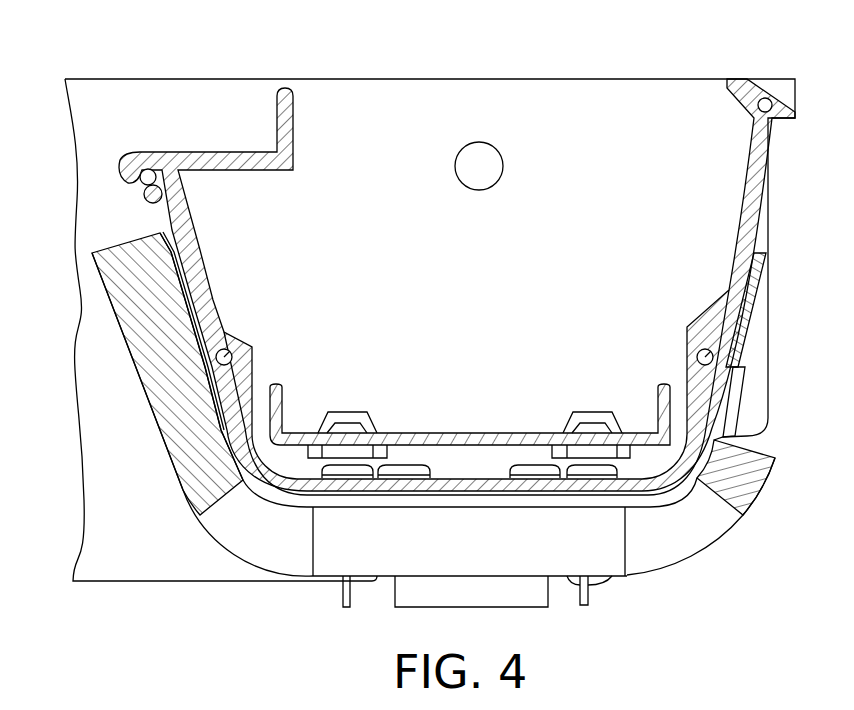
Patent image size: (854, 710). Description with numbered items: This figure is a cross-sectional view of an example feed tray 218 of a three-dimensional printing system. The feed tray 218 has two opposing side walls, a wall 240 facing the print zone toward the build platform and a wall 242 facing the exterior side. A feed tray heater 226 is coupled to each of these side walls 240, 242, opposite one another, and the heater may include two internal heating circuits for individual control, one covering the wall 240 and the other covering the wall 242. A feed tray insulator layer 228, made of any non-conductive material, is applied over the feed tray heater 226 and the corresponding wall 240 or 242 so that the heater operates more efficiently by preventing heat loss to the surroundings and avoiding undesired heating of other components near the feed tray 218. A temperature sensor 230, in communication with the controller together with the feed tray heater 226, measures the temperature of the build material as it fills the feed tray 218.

The feed tray 218 is at (773, 78).
The feed tray heater 226 is at (160, 233).
The feed tray insulator layer 228 is at (147, 413).
The temperature sensor 230 is at (232, 352).
The wall 240 is at (765, 167).
The wall 242 is at (163, 217).